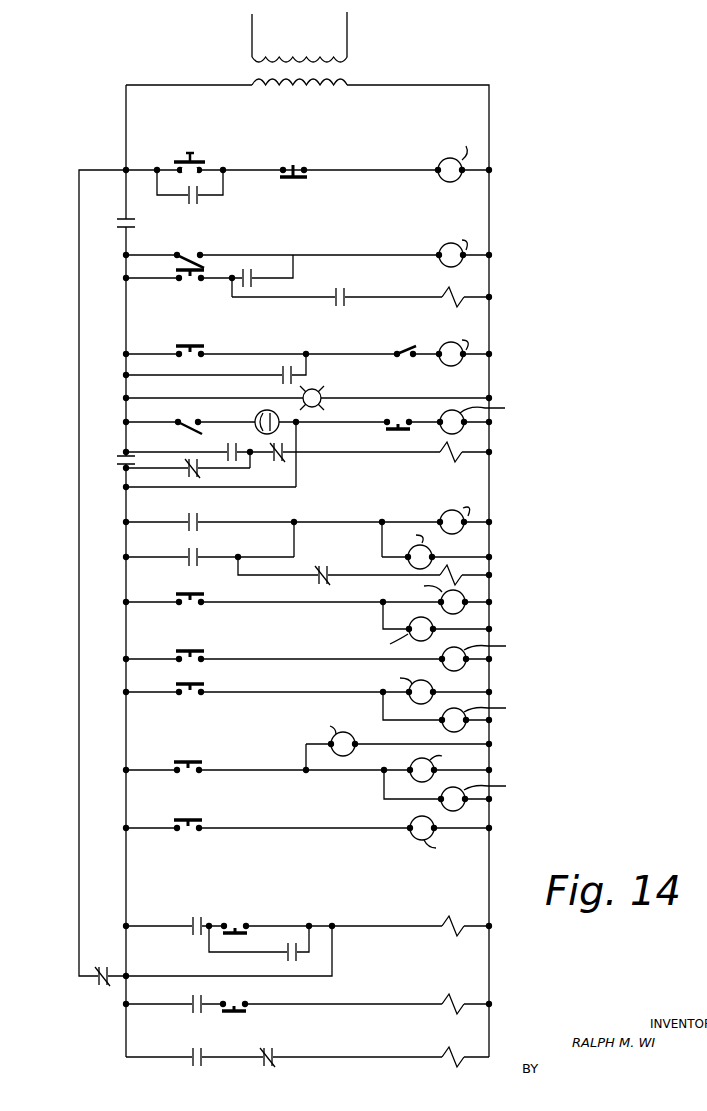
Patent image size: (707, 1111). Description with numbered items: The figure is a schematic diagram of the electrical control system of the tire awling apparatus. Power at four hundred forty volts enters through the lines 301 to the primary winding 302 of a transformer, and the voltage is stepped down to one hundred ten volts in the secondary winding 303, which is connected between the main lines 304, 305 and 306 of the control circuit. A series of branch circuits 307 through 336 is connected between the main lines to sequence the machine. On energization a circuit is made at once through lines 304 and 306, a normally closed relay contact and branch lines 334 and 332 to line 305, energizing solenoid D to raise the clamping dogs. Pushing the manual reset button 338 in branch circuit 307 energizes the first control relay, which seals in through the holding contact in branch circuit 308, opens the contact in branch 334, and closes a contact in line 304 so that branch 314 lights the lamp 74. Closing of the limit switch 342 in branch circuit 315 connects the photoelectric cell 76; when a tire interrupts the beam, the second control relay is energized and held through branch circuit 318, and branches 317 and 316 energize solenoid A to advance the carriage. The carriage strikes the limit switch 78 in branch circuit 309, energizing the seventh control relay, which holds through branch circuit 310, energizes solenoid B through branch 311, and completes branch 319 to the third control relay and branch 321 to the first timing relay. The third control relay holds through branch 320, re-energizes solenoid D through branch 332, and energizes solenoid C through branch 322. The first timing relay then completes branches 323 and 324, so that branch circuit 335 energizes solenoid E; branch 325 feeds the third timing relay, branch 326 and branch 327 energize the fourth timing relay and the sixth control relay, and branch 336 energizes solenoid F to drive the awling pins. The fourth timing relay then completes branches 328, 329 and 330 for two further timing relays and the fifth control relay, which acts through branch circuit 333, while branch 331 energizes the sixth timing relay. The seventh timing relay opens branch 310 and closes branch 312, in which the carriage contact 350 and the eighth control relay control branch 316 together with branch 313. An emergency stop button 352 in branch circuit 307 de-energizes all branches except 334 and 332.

The lines 301 is at (335, 30).
The primary winding 302 is at (322, 54).
The secondary winding 303 is at (299, 88).
The main line 304 is at (126, 125).
The main line 305 is at (489, 118).
The main line 306 is at (79, 212).
The branch circuit 307 is at (338, 170).
The branch circuit 308 is at (222, 197).
The branch circuit 309 is at (308, 245).
The branch circuit 310 is at (135, 282).
The branch circuit 311 is at (376, 297).
The branch circuit 312 is at (308, 343).
The branch circuit 313 is at (155, 384).
The branch circuit 314 is at (308, 391).
The branch circuit 315 is at (331, 442).
The branch circuit 316 is at (326, 452).
The branch circuit 317 is at (236, 468).
The branch circuit 318 is at (265, 489).
The branch circuit 319 is at (326, 522).
The branch circuit 320 is at (168, 556).
The branch circuit 321 is at (440, 557).
The branch circuit 322 is at (380, 575).
The branch circuit 323 is at (228, 602).
The branch circuit 324 is at (376, 628).
The branch circuit 325 is at (276, 651).
The branch circuit 326 is at (282, 684).
The branch circuit 327 is at (383, 716).
The branch circuit 328 is at (306, 758).
The branch circuit 329 is at (232, 770).
The branch circuit 330 is at (384, 796).
The branch circuit 331 is at (280, 828).
The branch circuit 332 is at (383, 926).
The branch circuit 333 is at (209, 956).
The branch circuit 334 is at (214, 976).
The branch circuit 335 is at (332, 1004).
The branch circuit 336 is at (362, 1057).
The manual reset button 338 is at (190, 152).
The limit switch 342 is at (182, 430).
The contact 350 is at (402, 345).
The emergency stop button 352 is at (285, 165).
The lamp 74 is at (320, 392).
The photoelectric cell 76 is at (260, 416).
The limit switch 78 is at (186, 255).